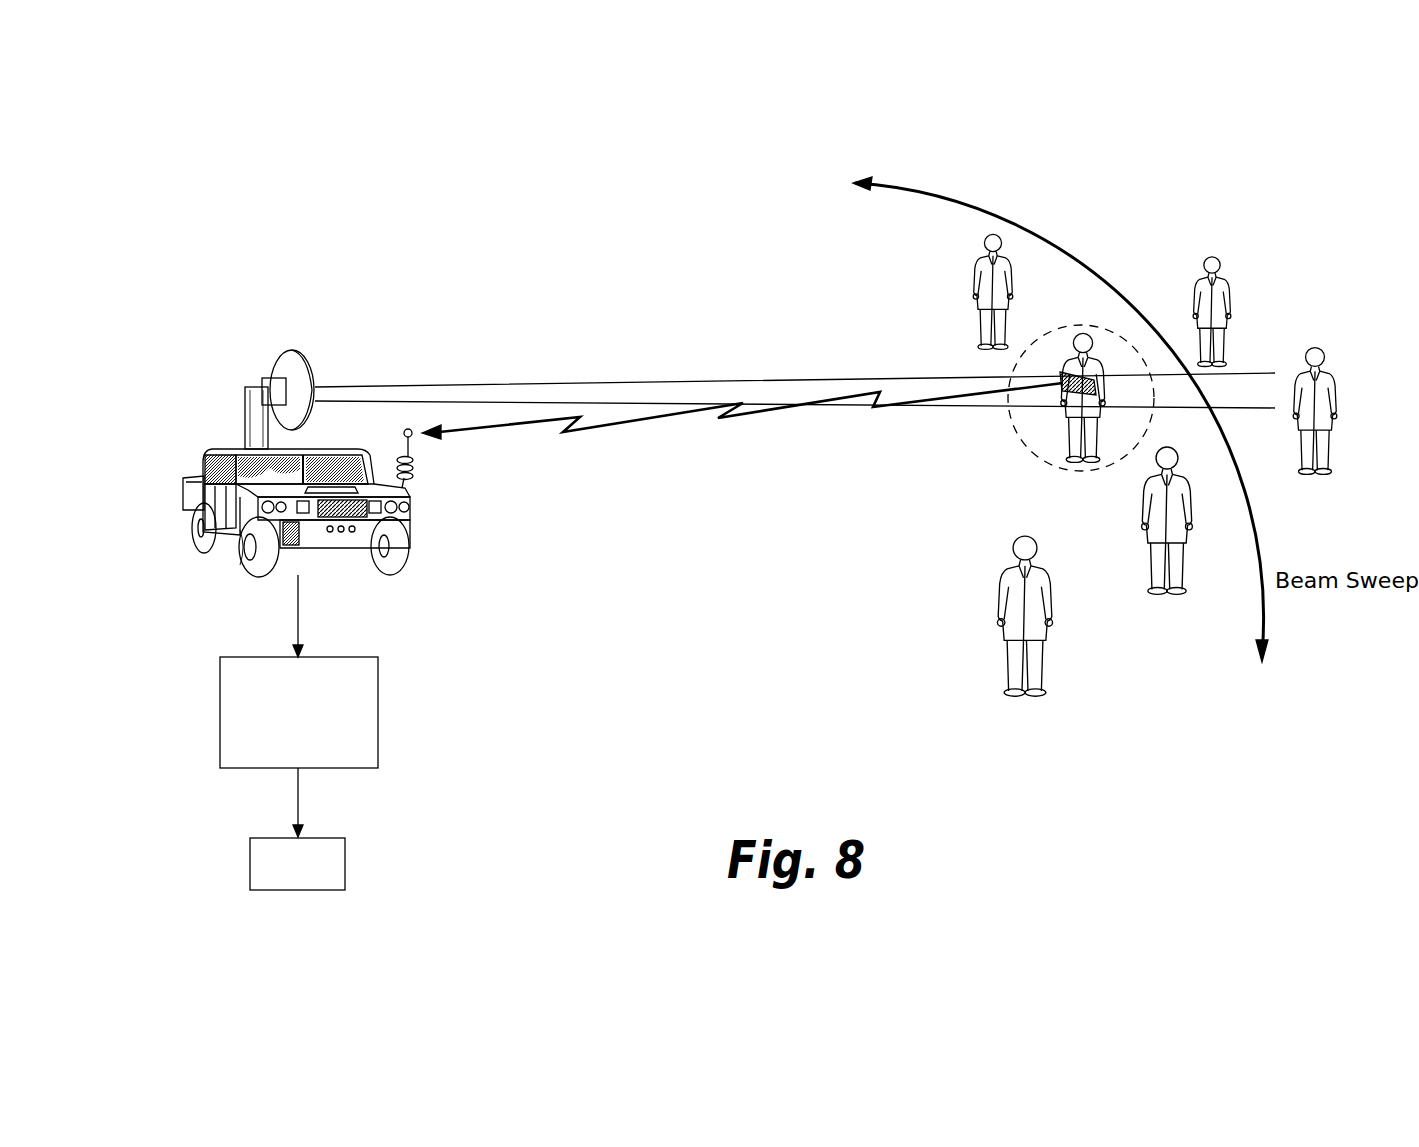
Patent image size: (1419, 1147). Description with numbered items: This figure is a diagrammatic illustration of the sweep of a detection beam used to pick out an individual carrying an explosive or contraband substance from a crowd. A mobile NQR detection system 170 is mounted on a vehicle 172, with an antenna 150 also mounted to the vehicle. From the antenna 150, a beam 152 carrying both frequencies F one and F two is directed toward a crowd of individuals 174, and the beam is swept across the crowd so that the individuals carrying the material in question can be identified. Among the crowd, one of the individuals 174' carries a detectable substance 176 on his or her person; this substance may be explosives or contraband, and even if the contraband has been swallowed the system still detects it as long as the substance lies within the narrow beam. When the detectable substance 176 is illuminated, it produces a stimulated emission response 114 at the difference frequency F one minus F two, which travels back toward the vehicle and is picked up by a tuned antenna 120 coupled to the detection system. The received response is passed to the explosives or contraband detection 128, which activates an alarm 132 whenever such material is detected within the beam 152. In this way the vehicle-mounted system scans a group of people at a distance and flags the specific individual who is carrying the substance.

The mobile NQR detection system 170 is at (212, 426).
The vehicle 172 is at (186, 486).
The antenna 150 is at (308, 355).
The beam 152 is at (590, 385).
The stimulated emission response 114 is at (745, 419).
The tuned antenna 120 is at (423, 468).
The explosives or contraband detection 128 is at (378, 673).
The alarm 132 is at (345, 855).
The individuals 174 is at (1120, 463).
The individual carrying detectable substance 174' is at (995, 397).
The detectable substance 176 is at (1040, 400).